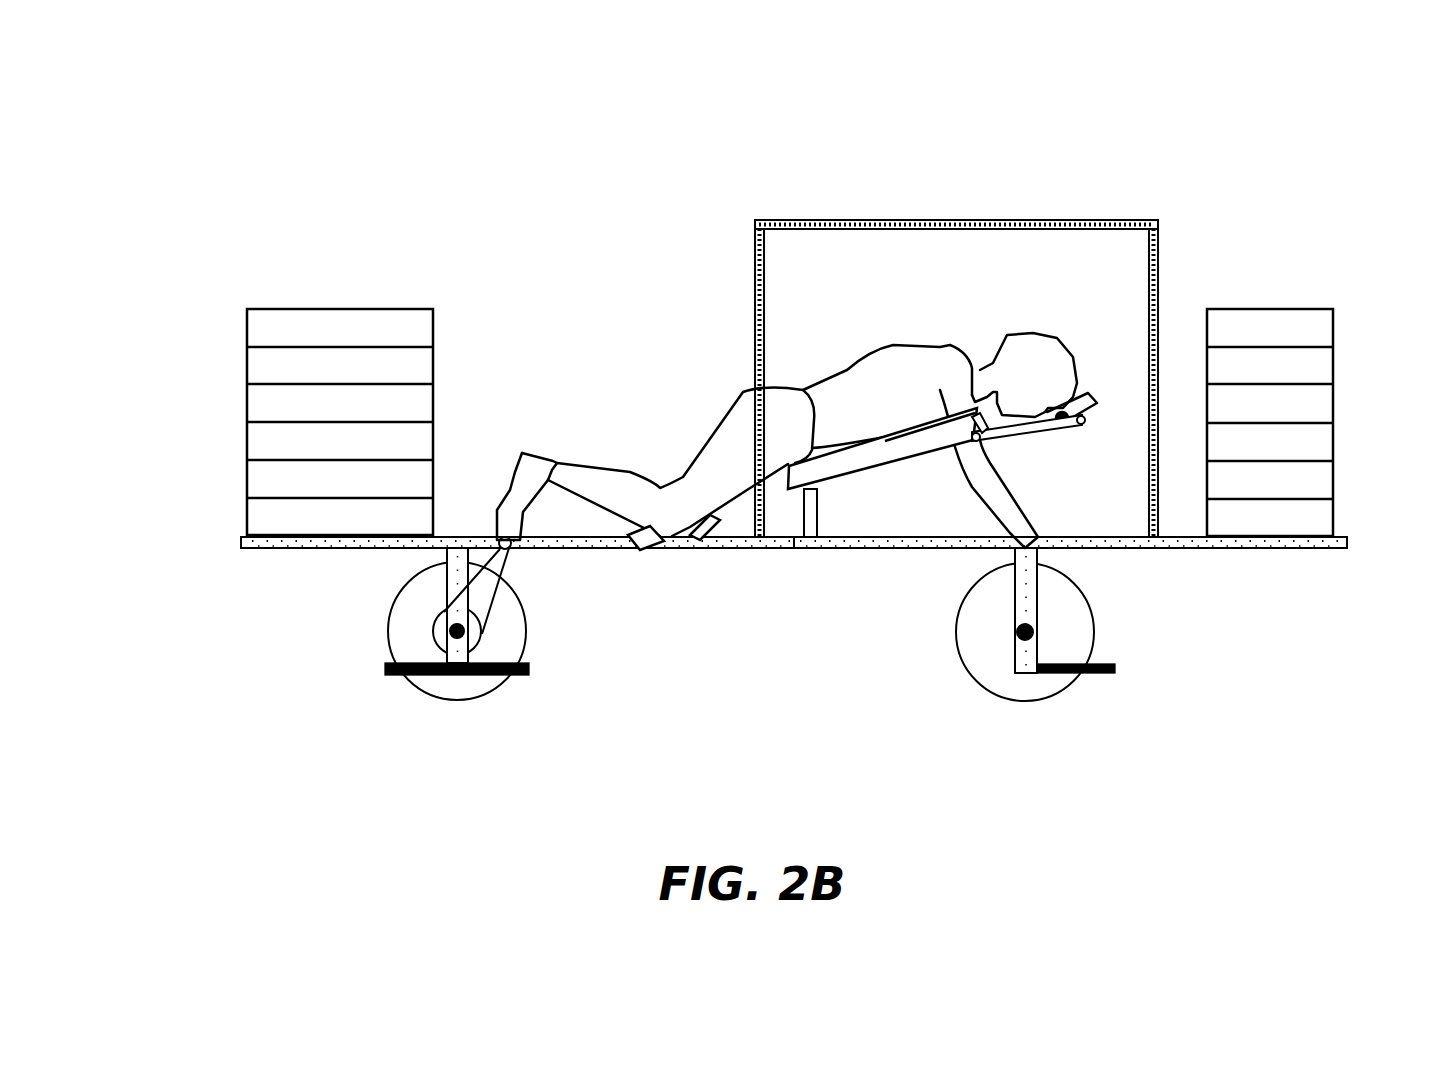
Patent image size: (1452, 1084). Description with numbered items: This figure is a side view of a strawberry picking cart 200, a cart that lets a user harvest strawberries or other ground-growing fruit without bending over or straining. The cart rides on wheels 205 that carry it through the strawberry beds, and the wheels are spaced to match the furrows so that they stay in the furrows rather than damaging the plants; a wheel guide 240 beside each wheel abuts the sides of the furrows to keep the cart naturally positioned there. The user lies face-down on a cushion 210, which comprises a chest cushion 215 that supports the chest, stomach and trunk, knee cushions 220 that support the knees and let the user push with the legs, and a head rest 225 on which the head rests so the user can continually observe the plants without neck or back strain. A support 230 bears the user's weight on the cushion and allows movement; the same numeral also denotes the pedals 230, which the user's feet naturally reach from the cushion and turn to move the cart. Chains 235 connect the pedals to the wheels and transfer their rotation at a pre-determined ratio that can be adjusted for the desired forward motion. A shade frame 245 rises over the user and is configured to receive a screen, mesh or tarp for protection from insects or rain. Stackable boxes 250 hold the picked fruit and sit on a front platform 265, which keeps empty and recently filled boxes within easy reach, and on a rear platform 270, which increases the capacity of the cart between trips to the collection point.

The strawberry picking cart 200 is at (265, 152).
The wheels 205 is at (493, 695).
The cushion 210 is at (885, 437).
The chest cushion 215 is at (880, 465).
The knee cushions 220 is at (702, 535).
The head rest 225 is at (1058, 420).
The support / pedals 230 is at (517, 553).
The chains 235 is at (500, 590).
The wheel guide 240 is at (533, 676).
The shade frame 245 is at (753, 298).
The boxes 250 is at (285, 485).
The front platform 265 is at (1255, 557).
The rear platform 270 is at (350, 557).